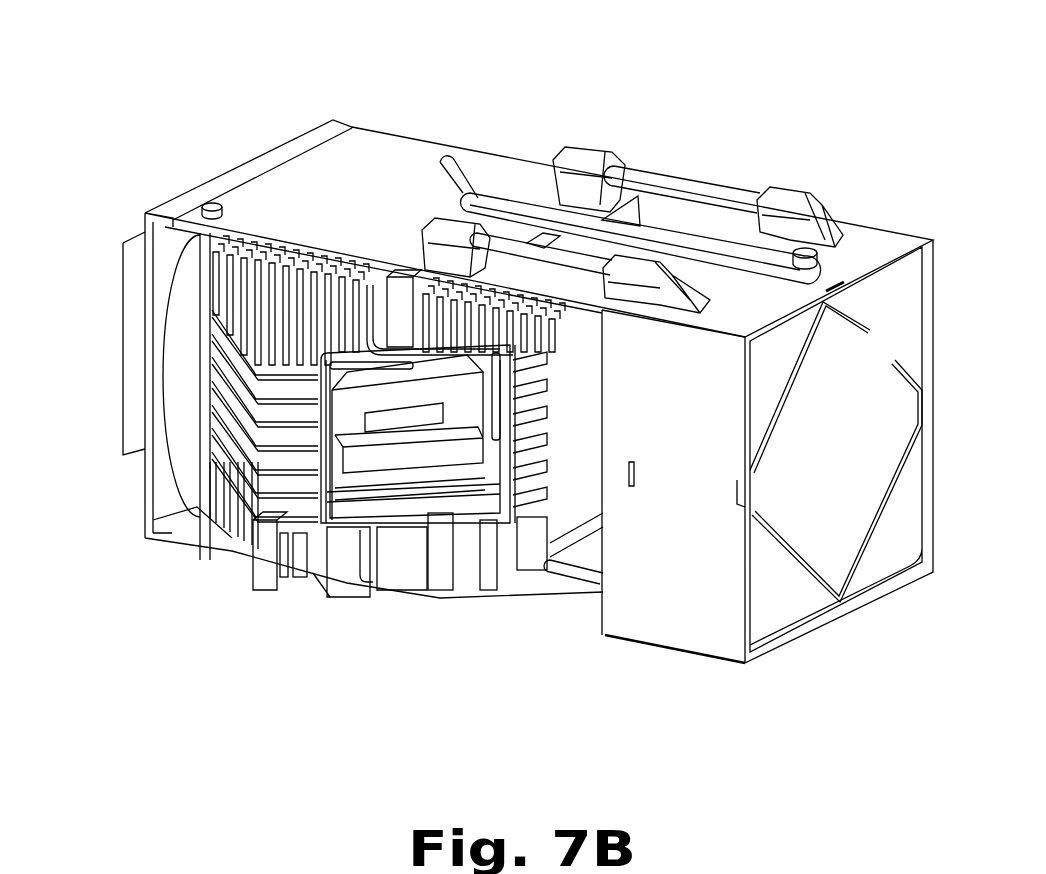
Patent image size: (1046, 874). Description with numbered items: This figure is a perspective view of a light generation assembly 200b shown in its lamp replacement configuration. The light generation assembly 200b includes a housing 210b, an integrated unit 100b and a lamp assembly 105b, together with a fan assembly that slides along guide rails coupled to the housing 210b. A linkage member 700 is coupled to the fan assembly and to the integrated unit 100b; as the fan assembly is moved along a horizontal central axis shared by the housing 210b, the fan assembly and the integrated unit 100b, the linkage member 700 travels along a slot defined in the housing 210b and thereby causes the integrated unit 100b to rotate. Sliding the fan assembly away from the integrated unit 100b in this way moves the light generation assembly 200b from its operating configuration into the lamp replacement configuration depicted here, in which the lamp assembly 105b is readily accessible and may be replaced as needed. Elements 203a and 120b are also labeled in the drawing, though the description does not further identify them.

The light generation assembly 200b is at (199, 126).
The housing 210b is at (340, 173).
The handle tubes 203a is at (690, 183).
The linkage member 700 is at (760, 257).
The integrated unit 100b is at (270, 465).
The lamp assembly 105b is at (390, 460).
The heat sink base 120b is at (360, 588).